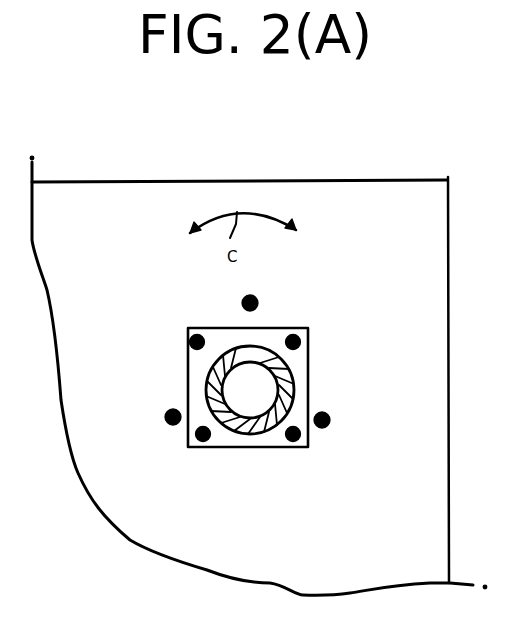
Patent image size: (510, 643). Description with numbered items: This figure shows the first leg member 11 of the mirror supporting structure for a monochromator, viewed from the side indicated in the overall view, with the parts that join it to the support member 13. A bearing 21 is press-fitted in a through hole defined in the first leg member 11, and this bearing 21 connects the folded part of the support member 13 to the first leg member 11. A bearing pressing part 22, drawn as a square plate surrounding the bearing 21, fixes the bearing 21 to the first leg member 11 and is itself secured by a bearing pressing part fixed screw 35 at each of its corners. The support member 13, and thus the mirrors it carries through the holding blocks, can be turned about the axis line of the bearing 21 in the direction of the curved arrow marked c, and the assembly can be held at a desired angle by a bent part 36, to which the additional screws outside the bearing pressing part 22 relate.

The first leg member 11 is at (117, 206).
The support member 13 is at (252, 388).
The bearing 21 is at (279, 384).
The bearing pressing part 22 is at (277, 328).
The bearing pressing part fixed screw 35 is at (190, 343).
The bent part 36 is at (256, 295).